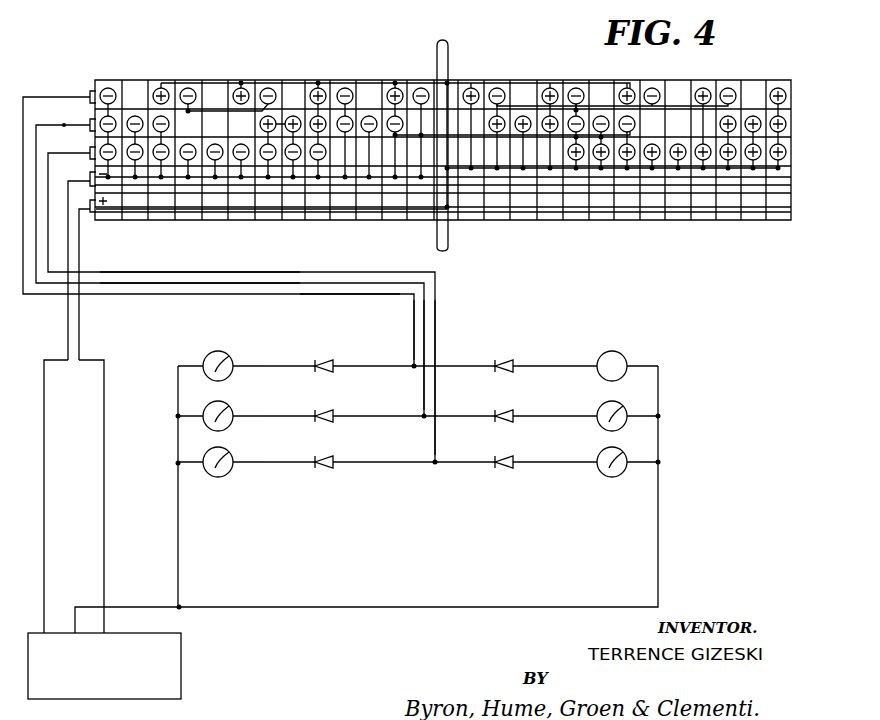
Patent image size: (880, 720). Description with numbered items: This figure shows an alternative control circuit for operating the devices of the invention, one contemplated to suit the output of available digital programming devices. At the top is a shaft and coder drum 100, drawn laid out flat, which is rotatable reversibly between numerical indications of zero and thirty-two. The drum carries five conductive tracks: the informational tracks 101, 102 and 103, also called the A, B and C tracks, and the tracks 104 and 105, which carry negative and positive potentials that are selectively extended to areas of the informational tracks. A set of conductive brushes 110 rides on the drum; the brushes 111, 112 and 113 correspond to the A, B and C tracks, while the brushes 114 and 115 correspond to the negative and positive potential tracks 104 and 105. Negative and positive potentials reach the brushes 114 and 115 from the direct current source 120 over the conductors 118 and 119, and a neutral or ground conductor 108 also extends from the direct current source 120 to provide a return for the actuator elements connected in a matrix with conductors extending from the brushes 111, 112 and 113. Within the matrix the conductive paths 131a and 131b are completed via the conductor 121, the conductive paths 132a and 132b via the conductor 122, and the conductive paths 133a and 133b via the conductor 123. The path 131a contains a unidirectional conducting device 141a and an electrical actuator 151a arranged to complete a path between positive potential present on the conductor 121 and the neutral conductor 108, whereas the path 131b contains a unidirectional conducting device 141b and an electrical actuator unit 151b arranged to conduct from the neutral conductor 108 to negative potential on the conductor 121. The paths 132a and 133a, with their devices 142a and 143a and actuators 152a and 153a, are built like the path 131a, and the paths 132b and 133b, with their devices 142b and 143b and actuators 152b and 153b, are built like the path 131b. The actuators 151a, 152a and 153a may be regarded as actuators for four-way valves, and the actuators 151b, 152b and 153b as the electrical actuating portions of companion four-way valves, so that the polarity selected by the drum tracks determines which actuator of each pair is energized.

The shaft and coder drum 100 is at (521, 55).
The conductive track 101 is at (443, 97).
The conductive track 102 is at (443, 125).
The conductive track 103 is at (443, 148).
The conductive track 104 is at (443, 145).
The conductive track 105 is at (392, 207).
The neutral or ground conductor 108 is at (368, 502).
The conductive brushes 110 is at (63, 88).
The brush 111 is at (218, 231).
The brush 112 is at (230, 269).
The brush 113 is at (241, 307).
The brush 114 is at (78, 270).
The brush 115 is at (90, 284).
The conductor 118 is at (68, 334).
The conductor 119 is at (80, 334).
The direct current source 120 is at (166, 686).
The conductor 121 is at (290, 295).
The conductor 122 is at (268, 265).
The conductor 123 is at (436, 273).
The conductive path 131a is at (390, 364).
The conductive path 132a is at (392, 414).
The conductive path 133a is at (395, 461).
The conductive path 131b is at (484, 361).
The conductive path 132b is at (484, 411).
The conductive path 133b is at (488, 456).
The unidirectional conducting device 141a is at (320, 360).
The unidirectional conducting device 142a is at (322, 410).
The unidirectional conducting device 143a is at (323, 457).
The unidirectional conducting device 141b is at (516, 354).
The unidirectional conducting device 142b is at (514, 404).
The unidirectional conducting device 143b is at (514, 449).
The electrical actuator 151a is at (225, 362).
The electrical actuator 152a is at (226, 412).
The electrical actuator 153a is at (227, 459).
The electrical actuator unit 151b is at (597, 359).
The electrical actuator 152b is at (602, 409).
The electrical actuator 153b is at (602, 454).